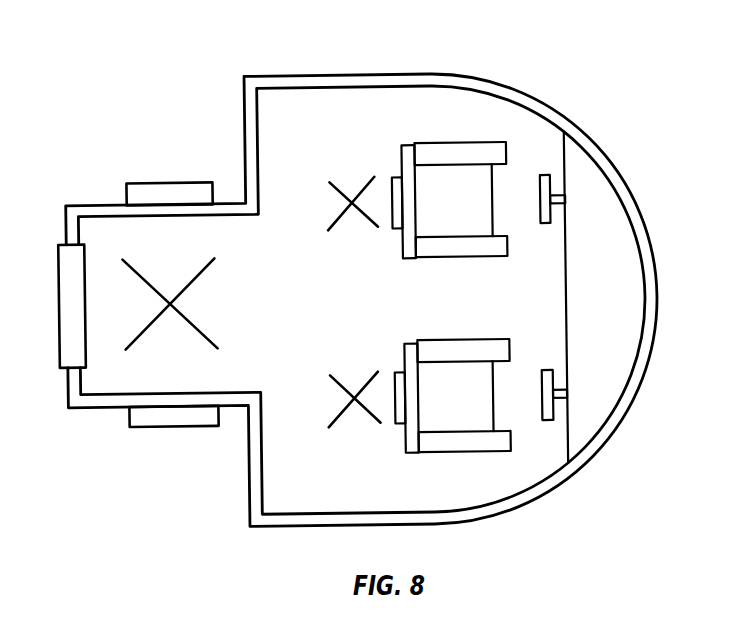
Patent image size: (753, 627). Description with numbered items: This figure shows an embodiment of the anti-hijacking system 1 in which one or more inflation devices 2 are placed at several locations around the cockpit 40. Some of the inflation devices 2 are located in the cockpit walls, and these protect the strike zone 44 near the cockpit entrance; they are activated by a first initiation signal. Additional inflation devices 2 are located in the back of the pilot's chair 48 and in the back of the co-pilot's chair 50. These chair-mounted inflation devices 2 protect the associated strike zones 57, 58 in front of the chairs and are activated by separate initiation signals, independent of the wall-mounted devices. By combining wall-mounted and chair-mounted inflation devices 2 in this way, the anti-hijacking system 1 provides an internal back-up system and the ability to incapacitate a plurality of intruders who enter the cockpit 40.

The anti-hijacking system 1 is at (596, 92).
The inflation device 2 is at (137, 179).
The cockpit 40 is at (346, 309).
The strike zone 44 is at (200, 302).
The pilot's chair 48 is at (468, 410).
The co-pilot's chair 50 is at (440, 215).
The strike zone 57 is at (337, 180).
The strike zone 58 is at (339, 373).